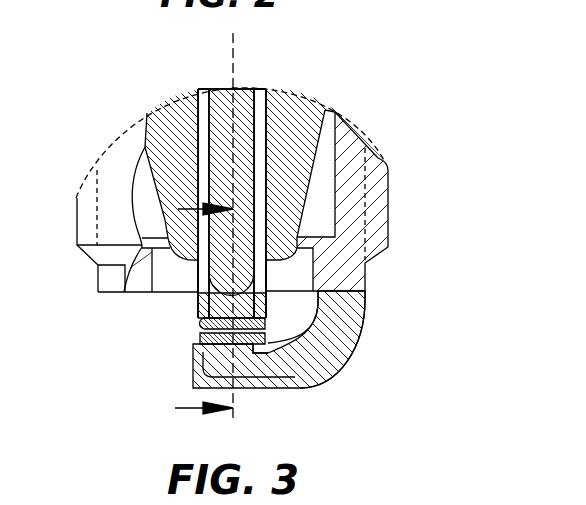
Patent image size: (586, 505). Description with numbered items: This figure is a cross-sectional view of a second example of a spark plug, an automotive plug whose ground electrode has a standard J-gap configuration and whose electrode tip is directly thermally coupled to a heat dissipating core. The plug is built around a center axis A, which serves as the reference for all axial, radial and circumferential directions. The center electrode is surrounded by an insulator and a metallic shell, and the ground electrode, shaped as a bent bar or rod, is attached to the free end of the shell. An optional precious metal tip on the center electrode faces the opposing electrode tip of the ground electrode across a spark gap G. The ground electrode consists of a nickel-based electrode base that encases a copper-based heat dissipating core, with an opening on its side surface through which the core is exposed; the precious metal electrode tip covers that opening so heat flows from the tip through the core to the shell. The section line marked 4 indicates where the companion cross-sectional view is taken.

The spark gap G is at (200, 334).
The center axis A is at (233, 52).
The section line 4- 4 is at (200, 310).